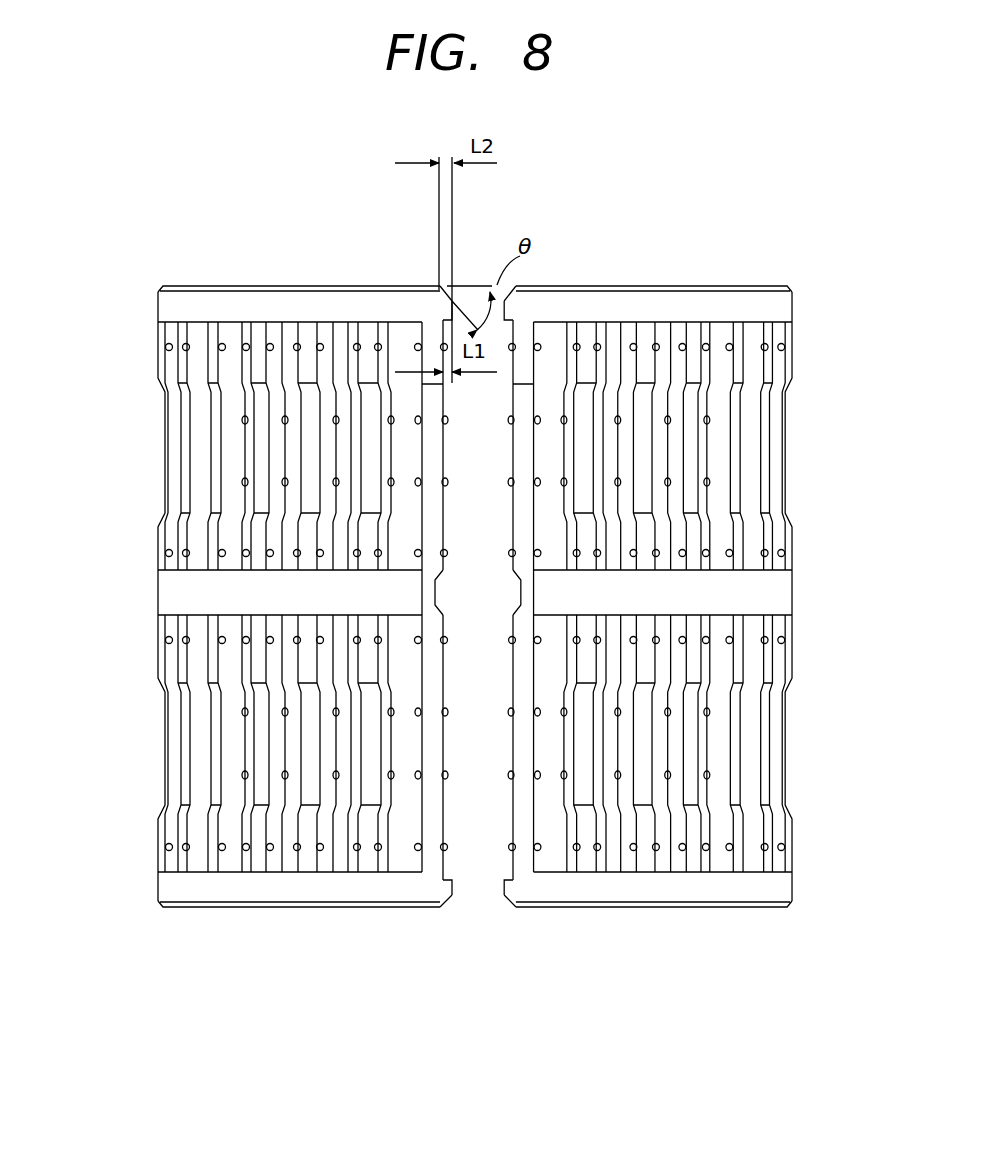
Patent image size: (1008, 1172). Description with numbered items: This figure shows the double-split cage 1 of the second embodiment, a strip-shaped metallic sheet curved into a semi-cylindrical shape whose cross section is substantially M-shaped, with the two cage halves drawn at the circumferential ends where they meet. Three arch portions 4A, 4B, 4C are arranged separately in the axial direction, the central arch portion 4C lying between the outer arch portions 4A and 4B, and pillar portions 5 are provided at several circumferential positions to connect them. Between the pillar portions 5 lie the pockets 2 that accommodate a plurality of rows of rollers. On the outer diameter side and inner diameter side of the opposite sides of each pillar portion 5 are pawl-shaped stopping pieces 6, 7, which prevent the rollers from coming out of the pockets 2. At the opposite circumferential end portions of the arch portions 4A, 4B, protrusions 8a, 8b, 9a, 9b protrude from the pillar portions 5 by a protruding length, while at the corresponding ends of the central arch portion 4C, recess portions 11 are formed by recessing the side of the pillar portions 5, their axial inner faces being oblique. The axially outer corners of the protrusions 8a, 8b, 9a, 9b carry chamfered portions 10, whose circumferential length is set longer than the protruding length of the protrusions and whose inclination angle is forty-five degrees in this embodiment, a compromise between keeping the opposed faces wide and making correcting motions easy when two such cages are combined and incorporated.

The double-split cage 1 is at (475, 590).
The pockets 2 is at (343, 337).
The arch portion 4A is at (228, 302).
The arch portion 4B is at (660, 890).
The central arch portion 4C is at (180, 598).
The pillar portions 5 is at (262, 463).
The stopping pieces 6 is at (322, 557).
The stopping pieces 7 is at (290, 735).
The protrusion 8a is at (505, 330).
The protrusion 8b is at (508, 880).
The protrusion 9a is at (459, 303).
The protrusion 9b is at (455, 877).
The chamfered portion 10 is at (440, 288).
The recess portion 11 is at (438, 595).